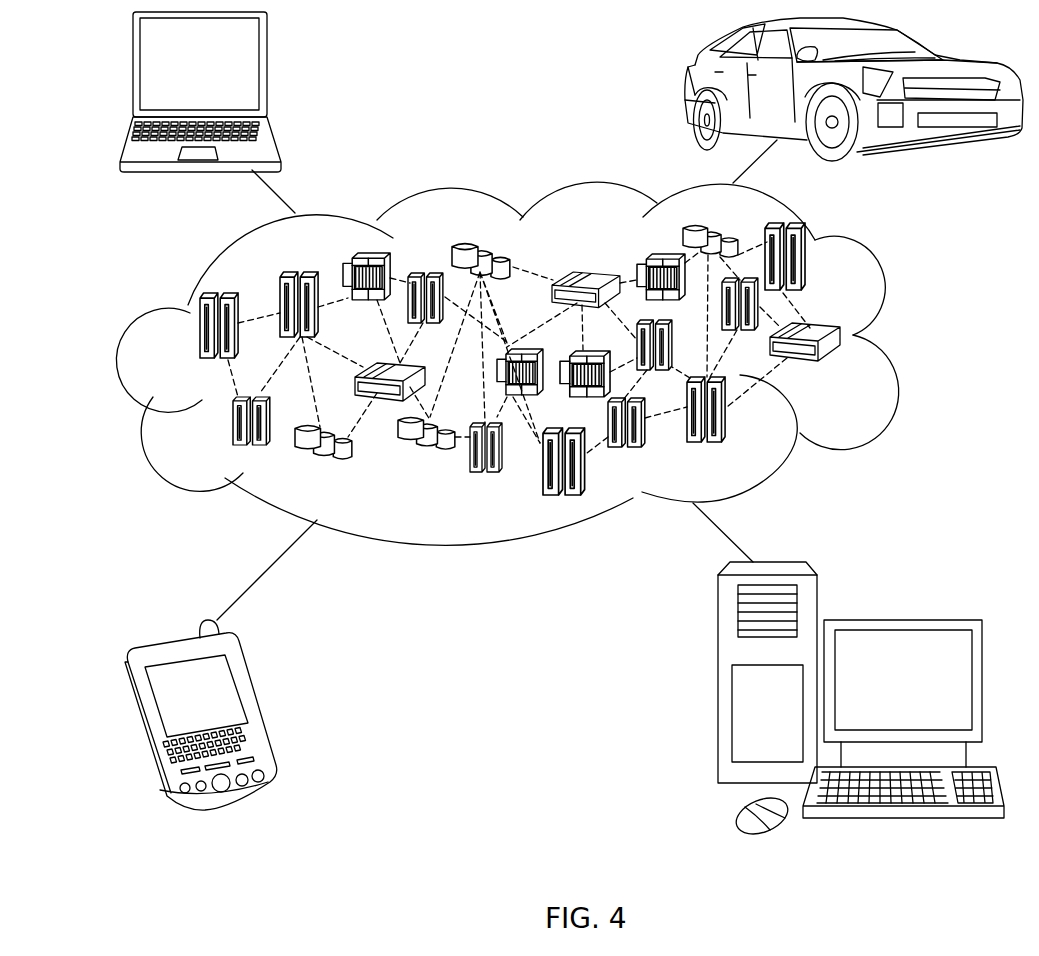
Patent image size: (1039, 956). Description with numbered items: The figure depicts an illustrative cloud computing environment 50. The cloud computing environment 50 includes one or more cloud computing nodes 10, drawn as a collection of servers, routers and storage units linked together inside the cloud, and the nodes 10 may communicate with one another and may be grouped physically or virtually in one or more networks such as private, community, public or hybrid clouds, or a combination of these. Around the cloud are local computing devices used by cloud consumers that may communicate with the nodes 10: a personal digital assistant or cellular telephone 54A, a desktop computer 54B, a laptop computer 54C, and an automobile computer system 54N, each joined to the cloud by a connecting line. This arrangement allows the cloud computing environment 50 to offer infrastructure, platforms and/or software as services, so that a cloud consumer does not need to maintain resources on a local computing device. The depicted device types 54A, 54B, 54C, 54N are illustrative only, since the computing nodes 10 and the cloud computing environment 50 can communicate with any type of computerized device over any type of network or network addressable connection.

The cloud computing node 10 is at (853, 369).
The cloud computing environment 50 is at (902, 340).
The personal digital assistant or cellular telephone 54A is at (257, 703).
The desktop computer 54B is at (900, 620).
The laptop computer 54C is at (267, 70).
The automobile computer system 54N is at (690, 88).